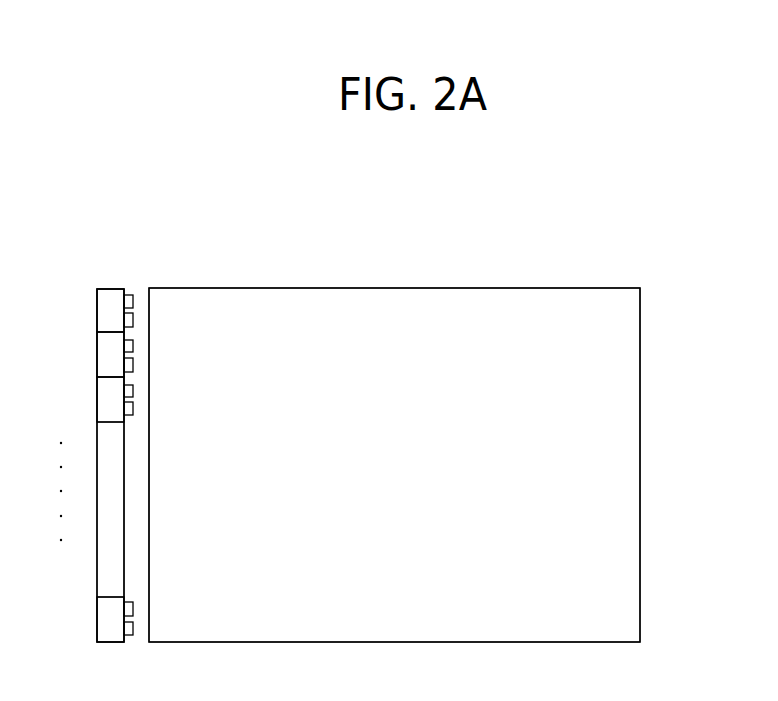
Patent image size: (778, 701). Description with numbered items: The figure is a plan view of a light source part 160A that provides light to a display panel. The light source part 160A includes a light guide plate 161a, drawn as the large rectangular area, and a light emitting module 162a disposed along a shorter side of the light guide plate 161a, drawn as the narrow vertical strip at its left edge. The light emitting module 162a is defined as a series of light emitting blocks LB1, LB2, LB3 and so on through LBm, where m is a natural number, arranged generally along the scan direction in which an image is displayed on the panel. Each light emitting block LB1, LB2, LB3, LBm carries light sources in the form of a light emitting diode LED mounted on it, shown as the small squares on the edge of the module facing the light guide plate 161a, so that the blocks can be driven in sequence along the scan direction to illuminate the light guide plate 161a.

The light source part 160A is at (424, 188).
The light guide plate 161a is at (642, 468).
The light emitting module 162a is at (110, 289).
The light emitting diode LED is at (128, 289).
The first light emitting block LB1 is at (97, 300).
The second light emitting block LB2 is at (97, 347).
The third light emitting block LB3 is at (97, 394).
The m-th light emitting block LBm is at (97, 615).